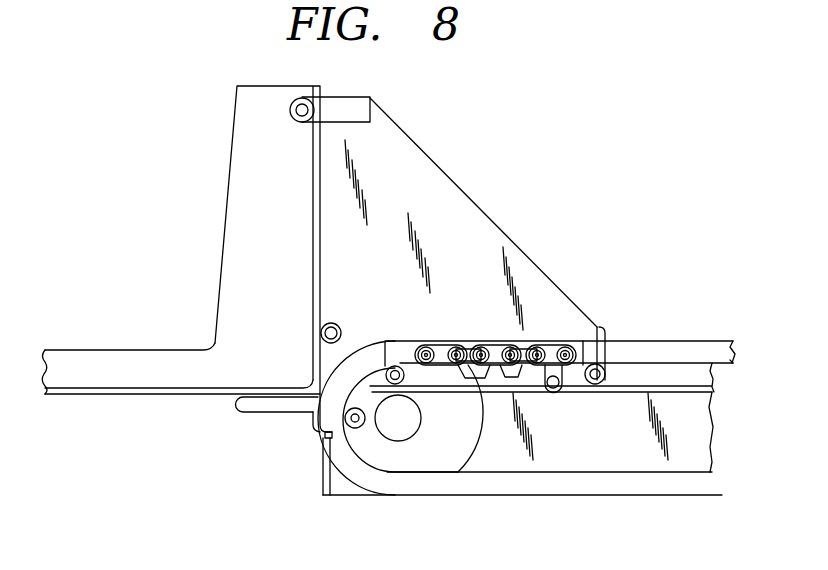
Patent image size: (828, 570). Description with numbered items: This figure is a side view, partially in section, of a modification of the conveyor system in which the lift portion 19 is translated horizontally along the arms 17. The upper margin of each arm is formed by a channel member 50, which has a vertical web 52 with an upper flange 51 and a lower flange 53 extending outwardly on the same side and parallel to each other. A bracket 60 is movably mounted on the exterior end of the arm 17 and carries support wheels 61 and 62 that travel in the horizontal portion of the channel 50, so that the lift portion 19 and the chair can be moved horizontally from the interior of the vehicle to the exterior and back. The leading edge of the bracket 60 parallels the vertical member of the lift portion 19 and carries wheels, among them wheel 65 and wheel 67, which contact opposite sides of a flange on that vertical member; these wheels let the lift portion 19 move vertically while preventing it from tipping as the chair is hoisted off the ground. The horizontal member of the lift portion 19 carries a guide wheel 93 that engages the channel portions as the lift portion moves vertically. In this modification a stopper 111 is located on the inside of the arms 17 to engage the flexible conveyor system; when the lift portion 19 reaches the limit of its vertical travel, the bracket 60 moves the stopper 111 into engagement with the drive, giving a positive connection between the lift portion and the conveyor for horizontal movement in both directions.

The arms 17 is at (528, 400).
The lift portion 19 is at (90, 362).
The channel members 50 is at (666, 352).
The upper flange 51 is at (717, 348).
The vertical web 52 is at (708, 370).
The lower flange 53 is at (672, 390).
The bracket 60 is at (422, 178).
The support wheel 61 is at (395, 366).
The support wheel 62 is at (602, 325).
The wheel 65 is at (321, 329).
The wheel 67 is at (290, 113).
The guide wheel 93 is at (325, 437).
The stopper 111 is at (494, 405).